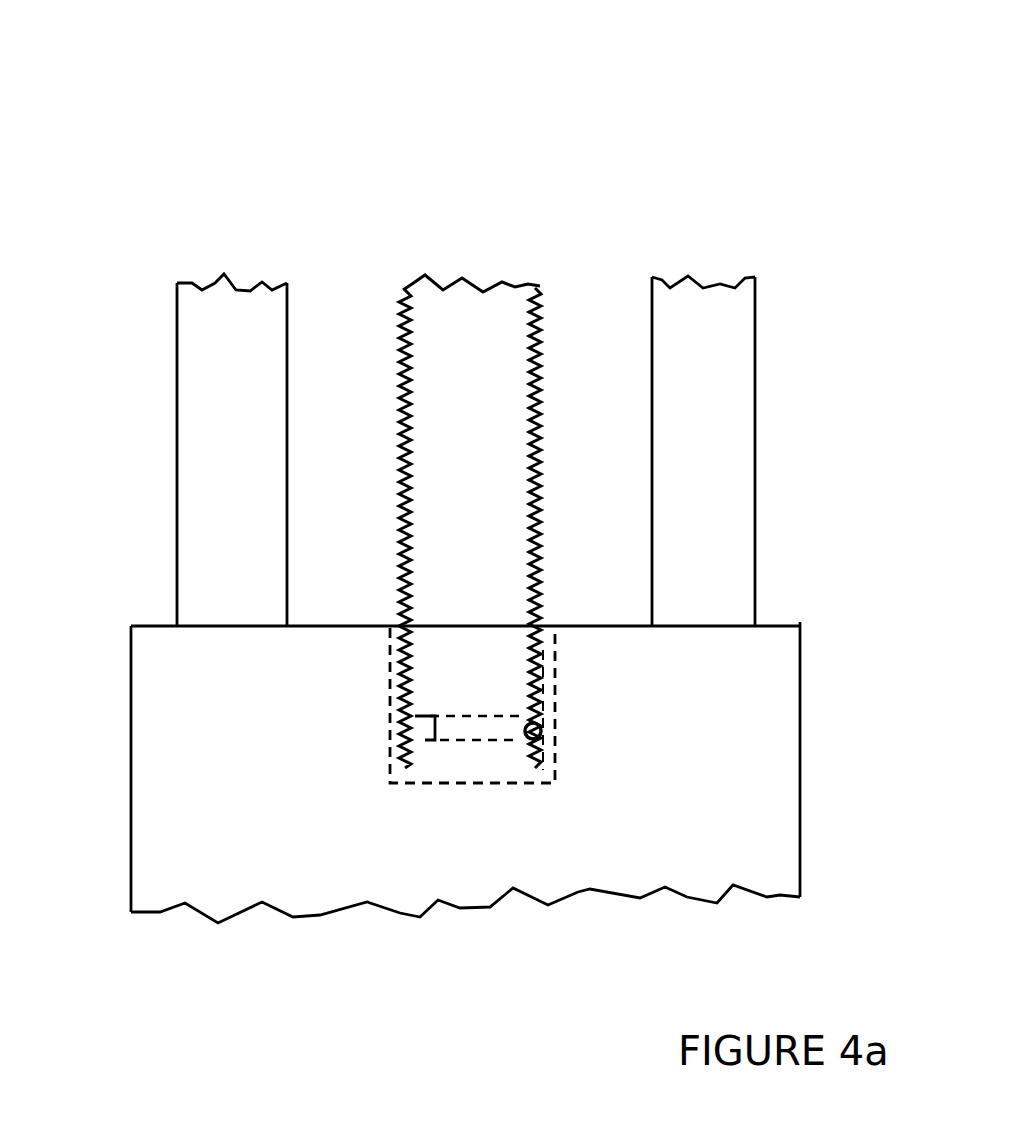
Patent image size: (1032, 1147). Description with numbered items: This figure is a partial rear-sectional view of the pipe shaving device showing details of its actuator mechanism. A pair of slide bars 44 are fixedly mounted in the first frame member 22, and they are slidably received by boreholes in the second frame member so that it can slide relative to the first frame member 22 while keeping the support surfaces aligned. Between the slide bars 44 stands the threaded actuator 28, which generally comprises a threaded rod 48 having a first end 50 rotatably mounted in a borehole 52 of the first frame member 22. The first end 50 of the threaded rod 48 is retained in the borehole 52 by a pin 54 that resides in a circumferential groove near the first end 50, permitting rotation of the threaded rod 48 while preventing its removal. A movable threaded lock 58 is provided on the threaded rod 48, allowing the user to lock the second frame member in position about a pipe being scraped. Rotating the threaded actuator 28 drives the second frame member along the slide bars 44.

The first frame member 22 is at (740, 824).
The threaded actuator 28 is at (510, 205).
The slide bars 44 is at (216, 428).
The threaded rod 48 is at (500, 435).
The first end 50 is at (475, 688).
The borehole 52 is at (553, 712).
The pin 54 is at (548, 737).
The movable threaded lock 58 is at (416, 737).